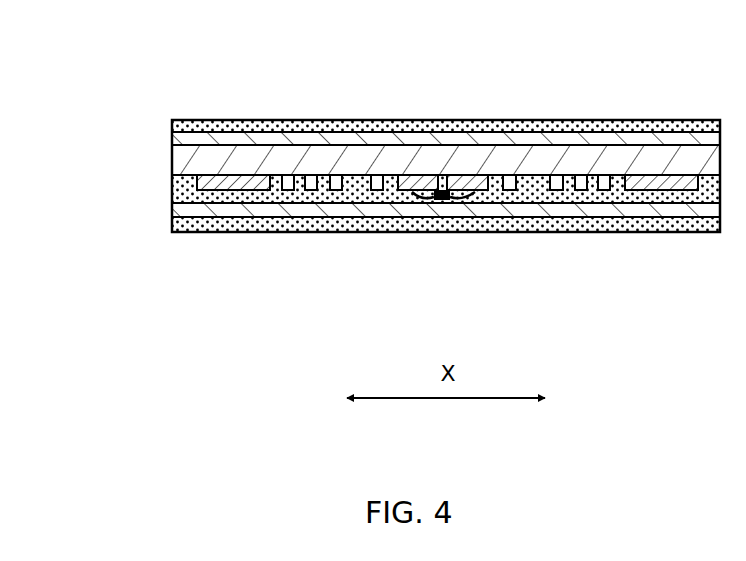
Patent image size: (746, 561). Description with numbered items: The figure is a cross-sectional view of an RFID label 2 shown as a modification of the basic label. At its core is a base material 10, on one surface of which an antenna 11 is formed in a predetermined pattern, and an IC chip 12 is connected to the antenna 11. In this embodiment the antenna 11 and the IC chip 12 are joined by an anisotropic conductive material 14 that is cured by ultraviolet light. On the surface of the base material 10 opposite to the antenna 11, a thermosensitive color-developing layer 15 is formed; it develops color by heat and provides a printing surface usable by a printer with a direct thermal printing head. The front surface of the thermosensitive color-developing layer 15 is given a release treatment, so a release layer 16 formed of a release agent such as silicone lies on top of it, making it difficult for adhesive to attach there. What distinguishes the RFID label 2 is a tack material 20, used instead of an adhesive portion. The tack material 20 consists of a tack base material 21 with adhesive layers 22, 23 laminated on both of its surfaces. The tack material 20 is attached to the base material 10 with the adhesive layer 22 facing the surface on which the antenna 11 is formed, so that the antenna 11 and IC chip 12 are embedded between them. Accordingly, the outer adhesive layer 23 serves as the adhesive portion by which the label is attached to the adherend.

The RFID label 2 is at (503, 90).
The base material 10 is at (178, 161).
The antenna 11 is at (178, 182).
The IC chip 12 is at (443, 200).
The anisotropic conductive material 14 is at (430, 198).
The thermosensitive color-developing layer 15 is at (178, 138).
The release layer 16 is at (178, 125).
The tack material 20 is at (377, 221).
The tack base material 21 is at (178, 207).
The adhesive layer 22 is at (178, 193).
The adhesive layer 23 is at (178, 225).